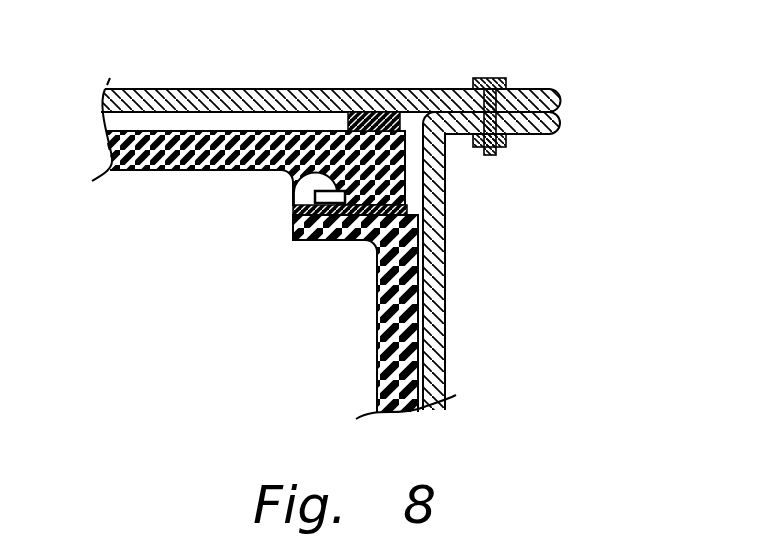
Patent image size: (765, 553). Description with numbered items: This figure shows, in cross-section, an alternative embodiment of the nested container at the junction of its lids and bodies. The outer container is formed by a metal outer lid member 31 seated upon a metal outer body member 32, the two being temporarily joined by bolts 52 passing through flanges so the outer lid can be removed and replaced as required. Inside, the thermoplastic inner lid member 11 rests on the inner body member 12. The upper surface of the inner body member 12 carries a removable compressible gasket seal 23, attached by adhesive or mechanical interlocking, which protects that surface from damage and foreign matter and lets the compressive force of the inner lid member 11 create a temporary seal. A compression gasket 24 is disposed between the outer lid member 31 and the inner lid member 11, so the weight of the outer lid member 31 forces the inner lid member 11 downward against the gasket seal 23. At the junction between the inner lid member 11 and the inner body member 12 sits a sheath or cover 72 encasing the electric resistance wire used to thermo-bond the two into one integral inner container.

The inner lid member 11 is at (152, 171).
The inner body member 12 is at (377, 330).
The gasket seal 23 is at (293, 212).
The compression gasket 24 is at (348, 124).
The outer lid member 31 is at (255, 88).
The outer body member 32 is at (452, 279).
The bolts 52 is at (493, 78).
The sheath or cover 72 is at (300, 197).